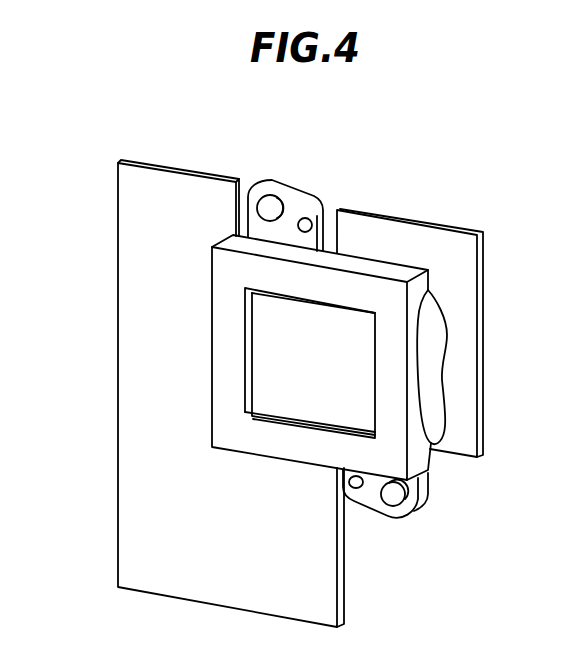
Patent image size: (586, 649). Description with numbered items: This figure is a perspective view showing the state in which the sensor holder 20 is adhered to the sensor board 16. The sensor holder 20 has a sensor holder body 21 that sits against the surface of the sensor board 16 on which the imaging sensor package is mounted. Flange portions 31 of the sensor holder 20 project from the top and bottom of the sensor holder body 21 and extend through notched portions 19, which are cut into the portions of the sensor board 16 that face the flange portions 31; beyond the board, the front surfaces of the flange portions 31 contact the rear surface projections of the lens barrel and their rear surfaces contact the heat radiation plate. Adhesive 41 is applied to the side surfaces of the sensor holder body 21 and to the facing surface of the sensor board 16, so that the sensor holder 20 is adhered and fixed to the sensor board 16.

The sensor board 16 is at (465, 277).
The notched portions 19 is at (245, 188).
The sensor holder 20 is at (243, 357).
The sensor holder body 21 is at (222, 367).
The flange portions 31 is at (290, 208).
The adhesive 41 is at (437, 367).